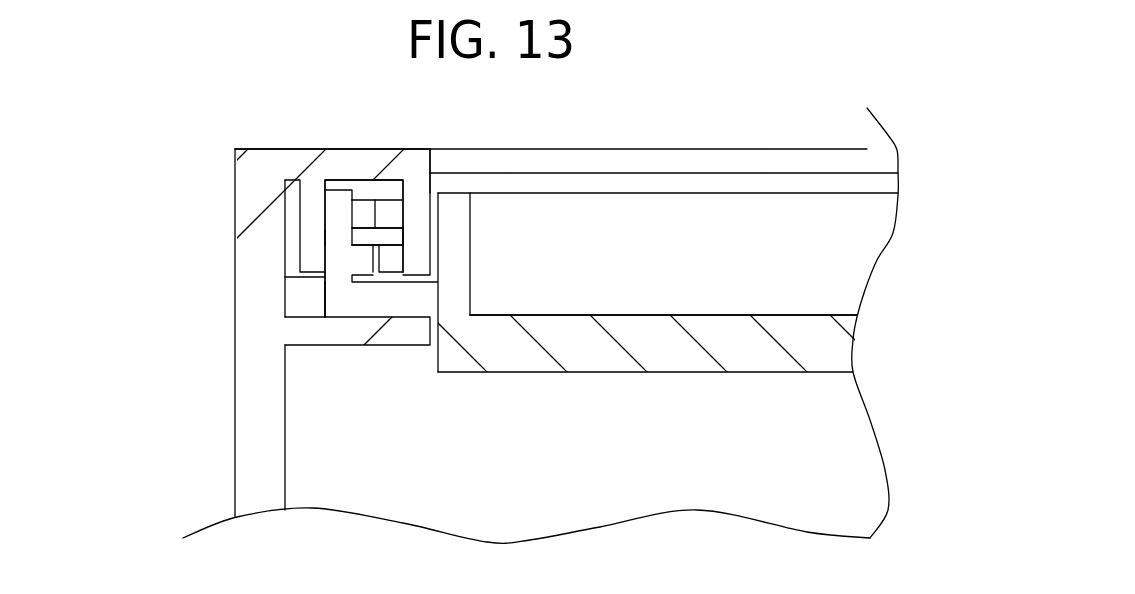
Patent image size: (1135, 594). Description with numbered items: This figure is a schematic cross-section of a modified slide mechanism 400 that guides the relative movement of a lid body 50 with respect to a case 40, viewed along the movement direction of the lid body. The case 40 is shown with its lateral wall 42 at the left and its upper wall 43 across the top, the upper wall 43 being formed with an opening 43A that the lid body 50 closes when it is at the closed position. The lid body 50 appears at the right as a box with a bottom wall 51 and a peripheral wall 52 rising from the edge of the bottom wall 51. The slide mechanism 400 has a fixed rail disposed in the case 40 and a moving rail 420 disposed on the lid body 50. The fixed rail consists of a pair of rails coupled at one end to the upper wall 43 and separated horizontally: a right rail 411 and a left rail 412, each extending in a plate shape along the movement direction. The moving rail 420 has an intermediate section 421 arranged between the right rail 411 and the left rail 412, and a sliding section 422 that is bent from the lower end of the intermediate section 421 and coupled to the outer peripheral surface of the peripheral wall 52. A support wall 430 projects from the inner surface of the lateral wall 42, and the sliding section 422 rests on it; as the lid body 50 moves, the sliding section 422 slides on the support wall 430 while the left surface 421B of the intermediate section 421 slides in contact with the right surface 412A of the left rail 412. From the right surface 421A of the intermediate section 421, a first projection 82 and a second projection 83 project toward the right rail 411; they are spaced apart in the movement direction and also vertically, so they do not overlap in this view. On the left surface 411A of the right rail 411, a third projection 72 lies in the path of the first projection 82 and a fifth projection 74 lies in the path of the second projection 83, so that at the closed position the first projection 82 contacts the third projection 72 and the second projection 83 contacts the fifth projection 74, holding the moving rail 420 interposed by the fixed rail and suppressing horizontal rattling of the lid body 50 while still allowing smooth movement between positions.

The case 40 is at (178, 117).
The lateral wall 42 is at (232, 168).
The upper wall 43 is at (253, 148).
The opening 43A is at (740, 162).
The lid body 50 is at (683, 352).
The bottom wall 51 is at (700, 317).
The peripheral wall 52 is at (477, 297).
The third projection 72 is at (398, 248).
The fifth projection 74 is at (392, 212).
The first projection 82 is at (353, 300).
The second projection 83 is at (363, 195).
The slide mechanism 400 is at (363, 397).
The right rail 411 is at (420, 190).
The left surface 411A is at (418, 188).
The left rail 412 is at (305, 201).
The right surface 412A is at (340, 180).
The moving rail 420 is at (170, 282).
The intermediate section 421 is at (330, 258).
The right surface 421A is at (350, 212).
The left surface 421B is at (327, 234).
The sliding section 422 is at (350, 300).
The support wall 430 is at (318, 335).